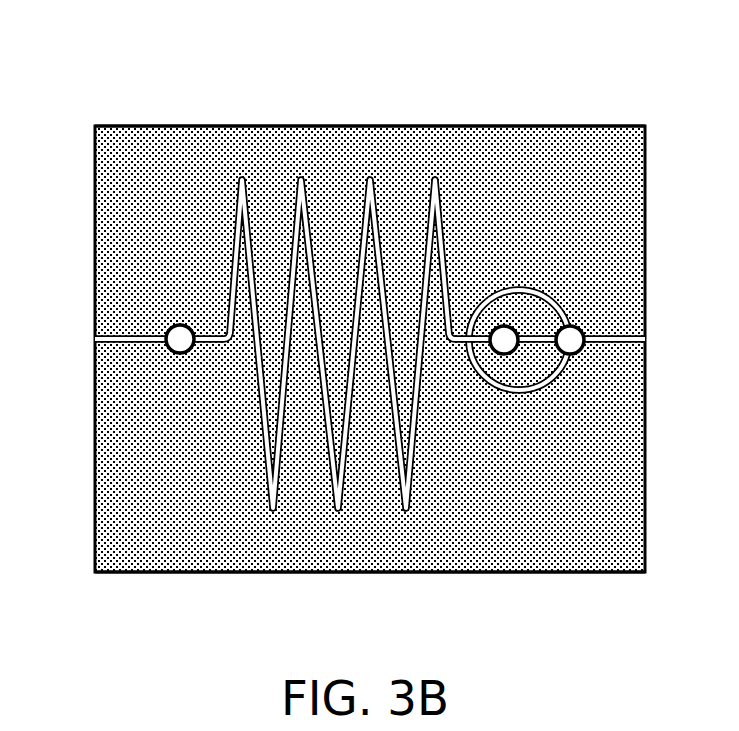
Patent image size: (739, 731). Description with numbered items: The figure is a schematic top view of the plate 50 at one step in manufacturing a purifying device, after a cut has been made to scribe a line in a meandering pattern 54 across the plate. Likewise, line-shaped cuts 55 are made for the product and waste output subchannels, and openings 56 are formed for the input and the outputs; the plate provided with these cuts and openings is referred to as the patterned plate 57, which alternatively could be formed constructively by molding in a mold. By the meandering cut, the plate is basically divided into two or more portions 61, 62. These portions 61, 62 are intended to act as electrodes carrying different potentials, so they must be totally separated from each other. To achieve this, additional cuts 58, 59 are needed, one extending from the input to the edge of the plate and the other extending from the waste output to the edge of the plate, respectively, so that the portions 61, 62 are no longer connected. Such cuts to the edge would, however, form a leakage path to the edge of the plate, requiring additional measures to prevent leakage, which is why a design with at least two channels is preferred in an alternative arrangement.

The plate 50 is at (535, 118).
The meandering pattern 54 is at (235, 168).
The line-shaped cuts 55 is at (510, 281).
The openings 56 is at (172, 331).
The patterned plate 57 is at (147, 67).
The additional cut 58 is at (88, 331).
The additional cut 59 is at (637, 332).
The plate portion 61 is at (397, 142).
The plate portion 62 is at (375, 538).